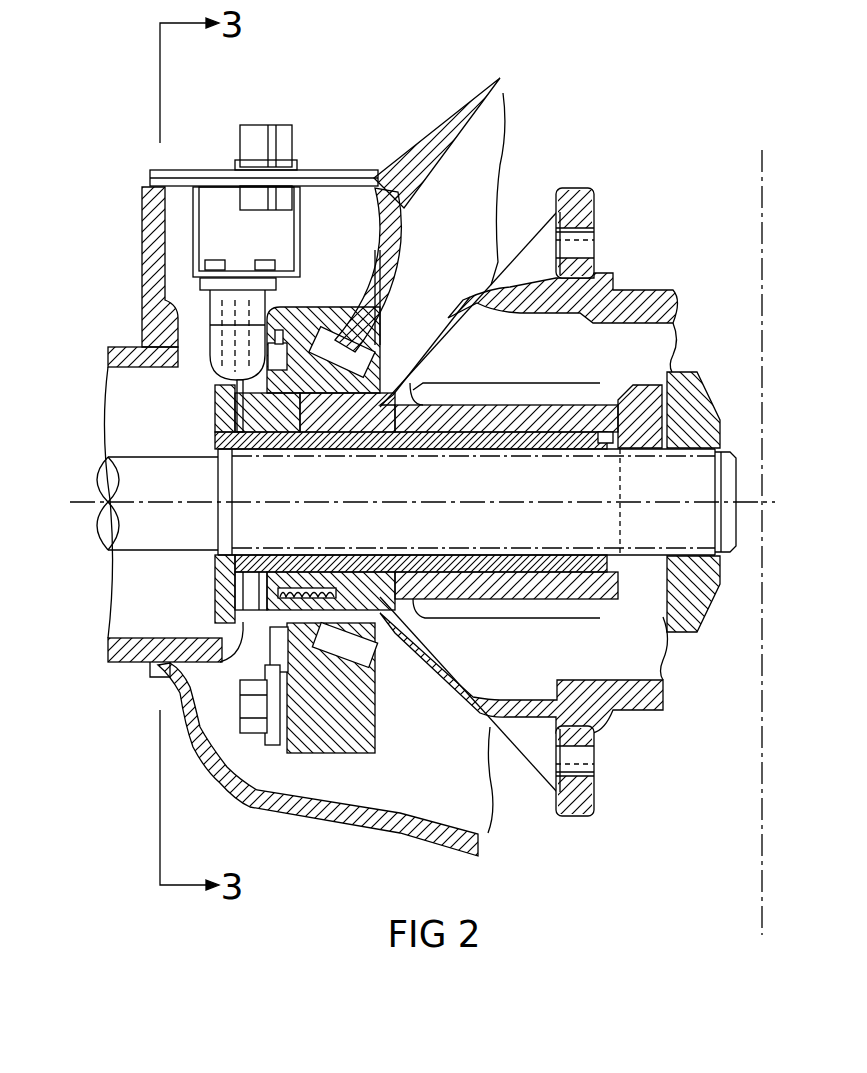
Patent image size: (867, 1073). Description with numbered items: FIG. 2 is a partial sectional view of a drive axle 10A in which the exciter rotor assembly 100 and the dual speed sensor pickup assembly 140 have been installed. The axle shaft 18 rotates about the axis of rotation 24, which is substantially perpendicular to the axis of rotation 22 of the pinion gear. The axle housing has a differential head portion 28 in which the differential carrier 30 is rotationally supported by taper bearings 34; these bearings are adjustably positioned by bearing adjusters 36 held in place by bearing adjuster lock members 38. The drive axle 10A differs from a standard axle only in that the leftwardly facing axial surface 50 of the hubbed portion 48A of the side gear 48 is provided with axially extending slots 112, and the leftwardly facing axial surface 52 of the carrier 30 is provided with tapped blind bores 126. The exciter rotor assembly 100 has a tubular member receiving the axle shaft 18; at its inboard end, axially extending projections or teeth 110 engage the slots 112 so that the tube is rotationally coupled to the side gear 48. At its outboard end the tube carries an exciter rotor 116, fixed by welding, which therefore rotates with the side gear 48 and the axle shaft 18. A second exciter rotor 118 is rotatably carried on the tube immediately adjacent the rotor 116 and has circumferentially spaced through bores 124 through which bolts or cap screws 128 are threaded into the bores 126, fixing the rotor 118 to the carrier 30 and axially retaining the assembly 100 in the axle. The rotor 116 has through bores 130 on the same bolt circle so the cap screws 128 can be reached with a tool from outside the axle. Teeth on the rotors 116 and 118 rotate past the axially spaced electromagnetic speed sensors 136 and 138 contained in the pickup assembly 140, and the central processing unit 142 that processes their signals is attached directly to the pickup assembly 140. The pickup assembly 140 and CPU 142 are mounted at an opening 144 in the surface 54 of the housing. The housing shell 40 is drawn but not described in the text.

The drive axle 10A is at (597, 140).
The axle shaft 18 is at (378, 490).
The axis of rotation of the pinion gear 22 is at (762, 150).
The axis of rotation of the ring gear 24 is at (428, 505).
The differential head portion 28 is at (462, 100).
The differential carrier 30 is at (592, 212).
The taper bearings 34 is at (362, 360).
The bearing adjusters 36 is at (373, 295).
The bearing adjuster lock members 38 is at (273, 740).
The housing shell 40 is at (247, 700).
The side gear 48 is at (692, 400).
The hubbed portion of side gear 48A is at (632, 430).
The leftwardly facing axial surface of side gear 50 is at (593, 442).
The leftwardly facing axial surface of the carrier 52 is at (300, 413).
The surface of the housing portion 54 is at (402, 195).
The exciter rotor assembly 100 is at (545, 430).
The projections or teeth 110 is at (652, 502).
The axially extending slots 112 is at (652, 502).
The exciter rotor 116 is at (218, 405).
The exciter rotor 118 is at (190, 670).
The through bores 124 is at (262, 573).
The tapped blind bores 126 is at (368, 577).
The bolts or cap screws 128 is at (305, 580).
The through bores 130 is at (216, 598).
The electromagnetic speed sensor 136 is at (212, 364).
The electromagnetic speed sensor 138 is at (262, 310).
The dual speed sensor pickup assembly 140 is at (313, 263).
The central processing unit 142 is at (217, 205).
The opening 144 is at (357, 197).